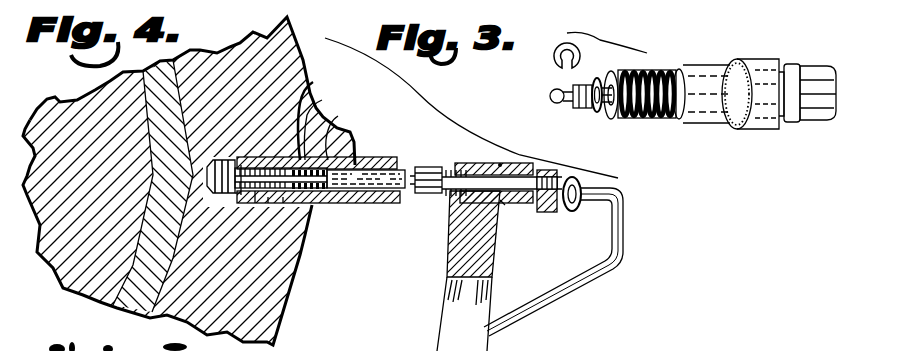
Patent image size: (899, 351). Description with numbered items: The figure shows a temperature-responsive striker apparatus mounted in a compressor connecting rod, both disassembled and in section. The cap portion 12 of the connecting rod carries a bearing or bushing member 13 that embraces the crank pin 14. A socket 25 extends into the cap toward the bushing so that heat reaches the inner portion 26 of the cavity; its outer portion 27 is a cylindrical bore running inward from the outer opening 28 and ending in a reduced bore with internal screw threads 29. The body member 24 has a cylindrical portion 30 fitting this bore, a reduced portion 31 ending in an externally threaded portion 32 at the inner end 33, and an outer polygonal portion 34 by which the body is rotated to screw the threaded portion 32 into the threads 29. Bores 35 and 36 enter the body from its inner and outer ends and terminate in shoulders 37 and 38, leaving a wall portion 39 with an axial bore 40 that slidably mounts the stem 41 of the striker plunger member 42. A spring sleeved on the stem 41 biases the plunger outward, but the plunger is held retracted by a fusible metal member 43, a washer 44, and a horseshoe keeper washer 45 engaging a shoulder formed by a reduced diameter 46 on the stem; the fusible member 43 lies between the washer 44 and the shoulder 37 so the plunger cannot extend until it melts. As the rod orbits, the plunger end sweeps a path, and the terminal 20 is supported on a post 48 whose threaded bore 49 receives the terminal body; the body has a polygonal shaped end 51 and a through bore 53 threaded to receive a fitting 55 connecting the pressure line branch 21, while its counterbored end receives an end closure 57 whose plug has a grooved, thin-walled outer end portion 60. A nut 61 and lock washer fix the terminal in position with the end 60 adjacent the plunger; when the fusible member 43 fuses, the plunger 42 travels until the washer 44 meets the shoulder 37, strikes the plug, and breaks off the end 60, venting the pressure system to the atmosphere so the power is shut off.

In FIG. 4, the cap portion 12 is at (298, 62).
In FIG. 4, the bearing or bushing member 13 is at (156, 62).
In FIG. 4, the crank pin 14 is at (55, 97).
In FIG. 4, the terminal 20 is at (500, 164).
In FIG. 4, the pressure line branch 21 is at (623, 223).
In FIG. 4, the body member 24 is at (368, 157).
In FIG. 3, the body member 24 is at (685, 70).
In FIG. 4, the socket 25 is at (323, 126).
In FIG. 4, the inner portion of the cavity 26 is at (226, 160).
In FIG. 4, the outer portion of the cavity 27 is at (313, 248).
In FIG. 4, the outer opening 28 is at (350, 204).
In FIG. 4, the internal screw threads 29 is at (240, 199).
In FIG. 4, the cylindrical portion 30 is at (348, 132).
In FIG. 3, the cylindrical portion 30 is at (747, 129).
In FIG. 4, the reduced portion 31 is at (315, 116).
In FIG. 3, the reduced portion 31 is at (686, 124).
In FIG. 3, the externally threaded portion 32 is at (637, 119).
In FIG. 3, the inner end 33 is at (604, 118).
In FIG. 4, the polygonal portion 34 is at (385, 204).
In FIG. 3, the polygonal portion 34 is at (794, 122).
In FIG. 3, the bore 35 is at (593, 78).
In FIG. 4, the bore 36 is at (396, 201).
In FIG. 4, the shoulder 37 is at (262, 160).
In FIG. 4, the shoulder 38 is at (300, 195).
In FIG. 4, the wall portion 39 is at (269, 200).
In FIG. 4, the axial bore 40 is at (283, 199).
In FIG. 4, the stem 41 is at (257, 197).
In FIG. 3, the stem 41 is at (591, 91).
In FIG. 4, the striker plunger member 42 is at (410, 167).
In FIG. 4, the fusible metal member 43 is at (243, 162).
In FIG. 3, the fusible metal member 43 is at (611, 75).
In FIG. 3, the washer 44 is at (574, 108).
In FIG. 3, the keeper member or horseshoe washer 45 is at (554, 56).
In FIG. 3, the reduced diameter 46 is at (553, 101).
In FIG. 4, the post 48 is at (495, 268).
In FIG. 4, the threaded bore 49 is at (474, 163).
In FIG. 4, the polygonal shaped end 51 is at (566, 176).
In FIG. 4, the through bore 53 is at (540, 212).
In FIG. 4, the fitting 55 is at (575, 210).
In FIG. 4, the end closure 57 is at (427, 168).
In FIG. 4, the outer end portion 60 is at (420, 191).
In FIG. 4, the nut 61 is at (502, 203).